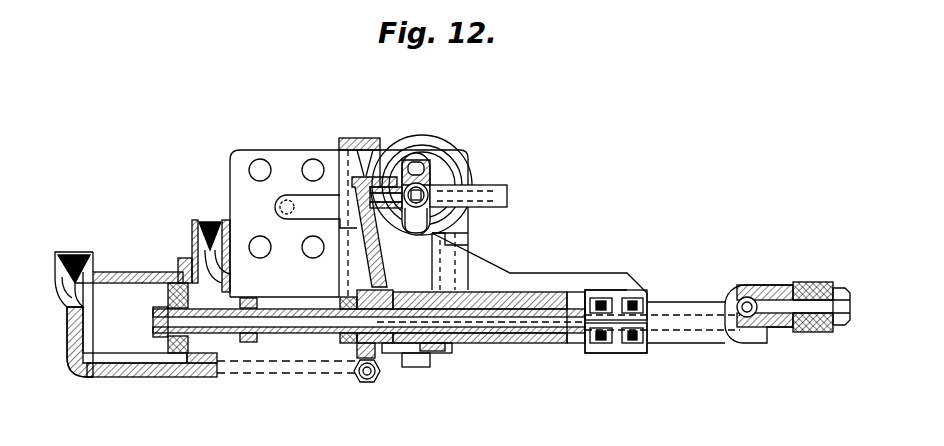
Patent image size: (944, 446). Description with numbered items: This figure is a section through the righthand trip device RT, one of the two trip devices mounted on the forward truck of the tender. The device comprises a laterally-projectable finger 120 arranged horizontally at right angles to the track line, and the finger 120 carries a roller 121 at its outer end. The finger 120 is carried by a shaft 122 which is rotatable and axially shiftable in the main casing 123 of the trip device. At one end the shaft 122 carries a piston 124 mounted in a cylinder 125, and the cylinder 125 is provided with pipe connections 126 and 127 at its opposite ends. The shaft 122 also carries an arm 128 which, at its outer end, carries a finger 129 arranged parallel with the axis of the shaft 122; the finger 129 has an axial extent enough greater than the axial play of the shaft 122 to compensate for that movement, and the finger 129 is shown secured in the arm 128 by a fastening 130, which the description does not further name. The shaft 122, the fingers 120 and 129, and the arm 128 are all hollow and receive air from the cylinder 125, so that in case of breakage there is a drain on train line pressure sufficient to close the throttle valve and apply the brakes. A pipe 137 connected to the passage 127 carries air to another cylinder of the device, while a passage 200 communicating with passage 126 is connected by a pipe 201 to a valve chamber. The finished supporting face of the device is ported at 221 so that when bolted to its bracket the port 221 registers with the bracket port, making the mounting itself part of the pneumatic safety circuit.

The laterally-projectable finger 120 is at (777, 269).
The roller 121 is at (833, 267).
The shaft 122 is at (560, 343).
The main casing 123 is at (595, 264).
The piston 124 is at (167, 350).
The cylinder 125 is at (147, 272).
The pipe connection 126 is at (207, 222).
The pipe connection 127 is at (90, 255).
The arm 128 is at (363, 266).
The finger 129 is at (507, 198).
The pin 130 is at (420, 220).
The pipe 137 is at (192, 247).
The passage 200 is at (178, 365).
The pipe 201 is at (333, 370).
The port 221 is at (275, 201).
The righthand trip device RT is at (468, 245).